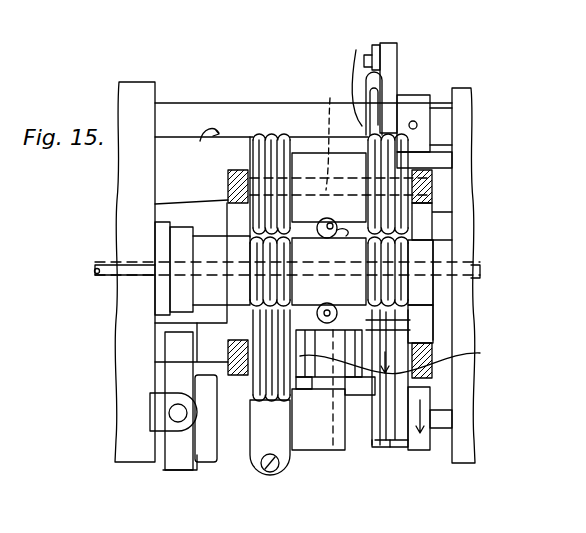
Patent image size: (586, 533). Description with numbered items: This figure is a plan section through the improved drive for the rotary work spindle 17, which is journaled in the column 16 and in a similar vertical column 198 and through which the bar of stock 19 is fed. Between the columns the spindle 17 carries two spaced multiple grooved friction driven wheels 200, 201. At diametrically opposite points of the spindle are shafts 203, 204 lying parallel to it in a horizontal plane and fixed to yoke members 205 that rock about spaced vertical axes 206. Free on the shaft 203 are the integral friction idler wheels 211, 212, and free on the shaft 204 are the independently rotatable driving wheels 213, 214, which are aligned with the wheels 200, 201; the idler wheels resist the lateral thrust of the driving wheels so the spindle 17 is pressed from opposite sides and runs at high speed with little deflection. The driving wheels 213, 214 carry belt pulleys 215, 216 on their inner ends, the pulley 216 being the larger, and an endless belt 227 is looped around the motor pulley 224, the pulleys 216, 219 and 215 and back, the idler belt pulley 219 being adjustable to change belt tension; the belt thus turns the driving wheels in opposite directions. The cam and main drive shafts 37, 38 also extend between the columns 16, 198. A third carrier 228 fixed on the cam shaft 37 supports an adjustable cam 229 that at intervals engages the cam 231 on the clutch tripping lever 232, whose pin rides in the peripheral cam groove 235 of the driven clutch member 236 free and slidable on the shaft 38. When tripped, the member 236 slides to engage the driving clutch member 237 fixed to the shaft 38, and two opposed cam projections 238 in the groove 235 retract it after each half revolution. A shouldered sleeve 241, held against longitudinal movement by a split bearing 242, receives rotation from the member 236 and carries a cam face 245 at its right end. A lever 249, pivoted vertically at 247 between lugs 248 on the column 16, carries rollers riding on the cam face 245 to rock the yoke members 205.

The column 16 is at (132, 88).
The vertical column 198 is at (472, 90).
The cam shaft 37 is at (287, 103).
The friction idler wheel 211 is at (262, 132).
The shaft 203 is at (329, 134).
The cam 231 is at (341, 77).
The cam 229 is at (374, 44).
The carrier 228 is at (397, 58).
The clutch tripping lever 232 is at (380, 118).
The friction idler wheel 212 is at (420, 164).
The yoke member 205 is at (434, 190).
The rotary work spindle 17 is at (210, 245).
The bar of stock 19 is at (106, 266).
The friction driven wheel 200 is at (250, 290).
The vertical axis 206 is at (335, 241).
The belt pulley 224 is at (304, 312).
The friction driven wheel 201 is at (395, 293).
The driving wheel 214 is at (400, 340).
The endless belt 227 is at (406, 357).
The driving clutch member 237 is at (430, 393).
The main drive shaft 38 is at (440, 418).
The lever 249 is at (185, 345).
The lugs 248 is at (170, 388).
The pivot 247 is at (168, 412).
The cam face 245 is at (190, 462).
The driving wheel 213 is at (252, 395).
The split bearing 242 is at (258, 425).
The belt pulley 215 is at (302, 388).
The shouldered sleeve 241 is at (307, 448).
The shaft 204 is at (340, 448).
The idler belt pulley 219 is at (345, 450).
The belt pulley 216 is at (398, 443).
The driven clutch member 236 is at (395, 453).
The cam groove 235 is at (383, 455).
The cam projection 238 is at (395, 447).